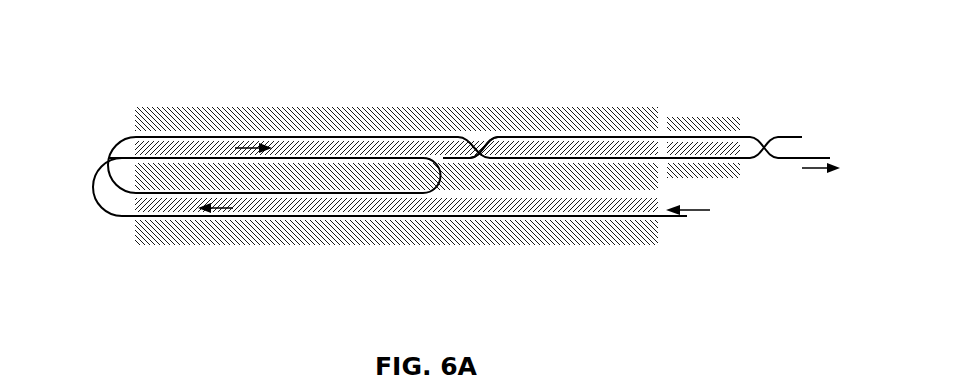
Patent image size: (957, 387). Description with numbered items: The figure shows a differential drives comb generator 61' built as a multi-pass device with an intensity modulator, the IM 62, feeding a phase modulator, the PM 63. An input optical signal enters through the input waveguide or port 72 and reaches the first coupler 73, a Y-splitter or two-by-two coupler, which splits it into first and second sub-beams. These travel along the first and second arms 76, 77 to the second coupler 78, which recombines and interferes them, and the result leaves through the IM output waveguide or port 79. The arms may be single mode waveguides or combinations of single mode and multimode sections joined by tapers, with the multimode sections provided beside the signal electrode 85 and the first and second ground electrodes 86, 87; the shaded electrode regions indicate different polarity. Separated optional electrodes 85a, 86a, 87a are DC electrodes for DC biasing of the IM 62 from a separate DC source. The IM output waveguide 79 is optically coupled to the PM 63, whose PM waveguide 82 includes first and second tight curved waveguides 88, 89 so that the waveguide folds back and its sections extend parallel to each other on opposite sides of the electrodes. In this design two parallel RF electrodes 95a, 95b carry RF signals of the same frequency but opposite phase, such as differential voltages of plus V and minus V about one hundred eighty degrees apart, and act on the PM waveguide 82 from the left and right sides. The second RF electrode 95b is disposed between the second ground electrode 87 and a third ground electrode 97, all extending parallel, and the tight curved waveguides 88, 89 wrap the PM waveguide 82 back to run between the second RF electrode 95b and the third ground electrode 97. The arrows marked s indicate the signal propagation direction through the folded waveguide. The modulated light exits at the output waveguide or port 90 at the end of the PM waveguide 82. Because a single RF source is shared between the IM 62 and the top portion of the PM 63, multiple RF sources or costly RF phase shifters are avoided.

The differential drives comb generator 61' is at (397, 158).
The IM 62 is at (676, 46).
The PM 63 is at (221, 84).
The input waveguide or port 72 is at (828, 158).
The first coupler 73 is at (765, 142).
The first arm 76 is at (587, 135).
The second arm 77 is at (532, 158).
The second coupler 78 is at (489, 140).
The IM output waveguide or port 79 is at (430, 135).
The PM waveguide 82 is at (160, 133).
The signal electrode 85 is at (92, 190).
The separated optional electrode 85a is at (740, 148).
The first ground electrode 86 is at (317, 117).
The separated optional electrode 86a is at (727, 118).
The second ground electrode 87 is at (317, 178).
The separated optional electrode 87a is at (713, 177).
The first tight curved waveguide 88 is at (110, 145).
The second tight curved waveguide 89 is at (440, 185).
The output waveguide or port 90 is at (687, 217).
The first RF electrode 95a is at (367, 148).
The second RF electrode 95b is at (575, 210).
The third ground electrode 97 is at (175, 233).
The forward signal s is at (222, 148).